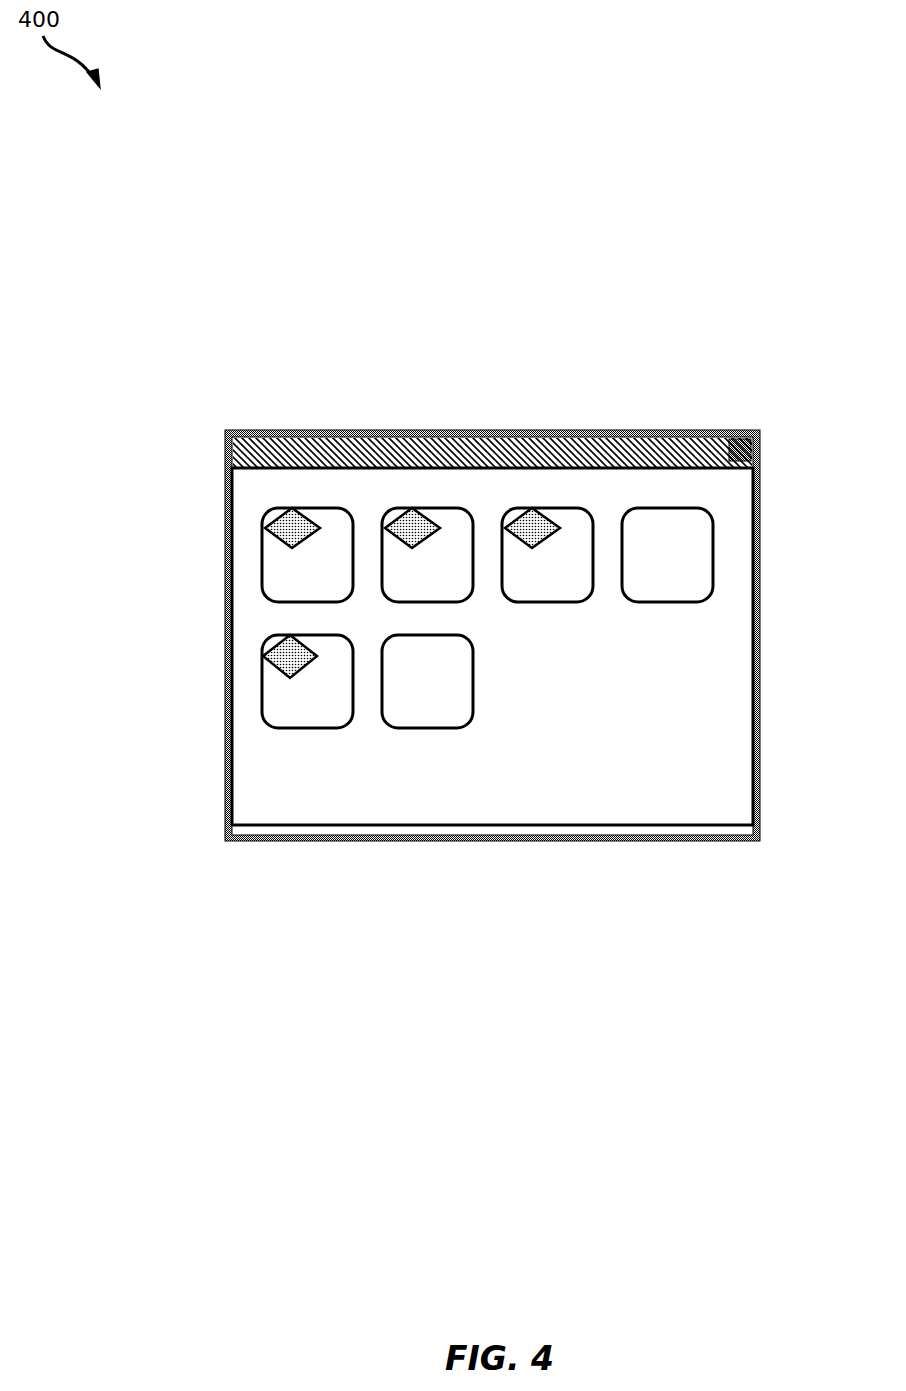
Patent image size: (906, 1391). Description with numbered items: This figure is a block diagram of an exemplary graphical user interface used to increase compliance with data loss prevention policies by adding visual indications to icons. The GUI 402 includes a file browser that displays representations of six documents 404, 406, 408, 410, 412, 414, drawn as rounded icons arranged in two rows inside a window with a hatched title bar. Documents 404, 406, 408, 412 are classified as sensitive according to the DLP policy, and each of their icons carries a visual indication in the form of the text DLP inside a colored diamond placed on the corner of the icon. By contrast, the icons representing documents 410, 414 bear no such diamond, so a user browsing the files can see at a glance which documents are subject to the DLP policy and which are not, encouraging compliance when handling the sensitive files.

The GUI 402 is at (712, 840).
The document 404 is at (307, 508).
The document 406 is at (427, 508).
The document 408 is at (547, 508).
The document 410 is at (668, 508).
The document 412 is at (307, 728).
The document 414 is at (427, 728).